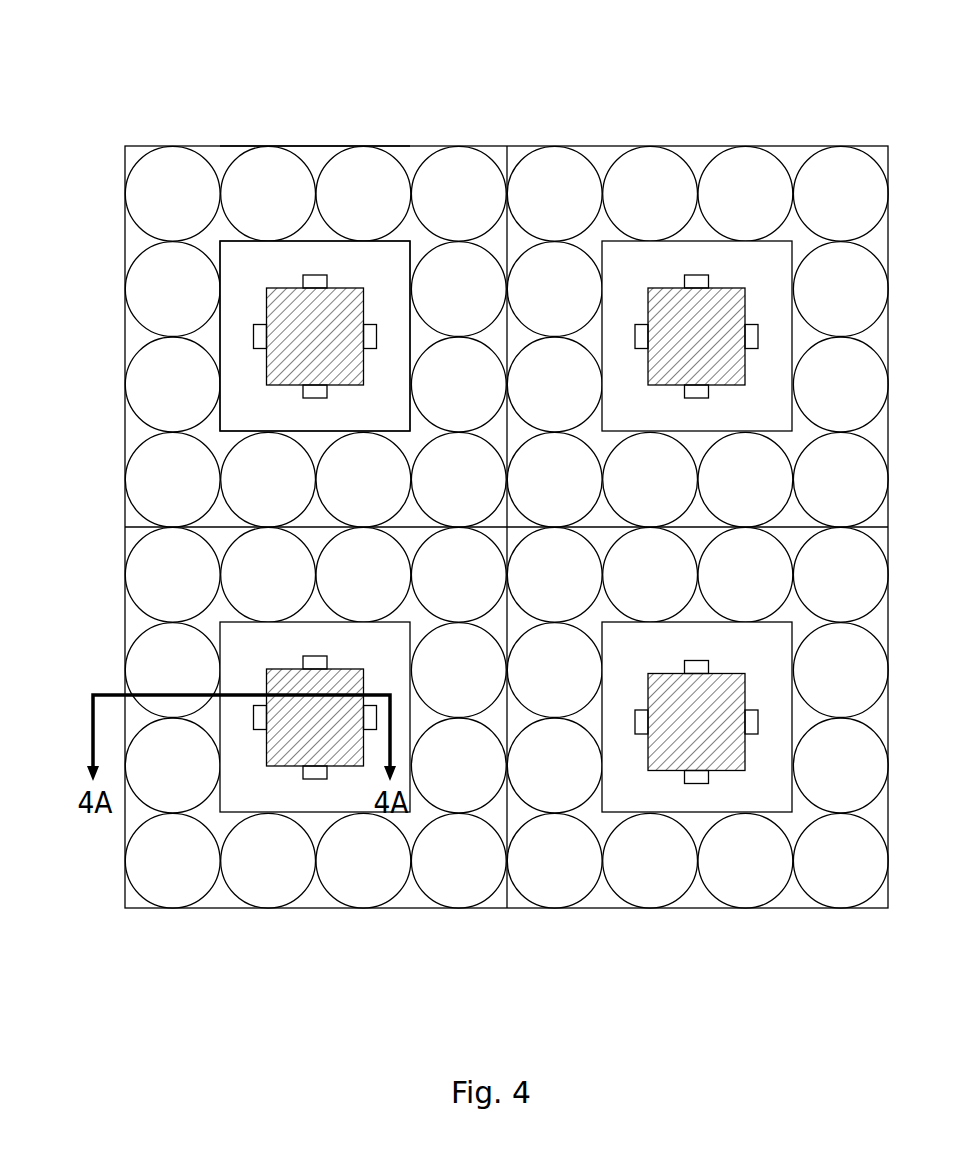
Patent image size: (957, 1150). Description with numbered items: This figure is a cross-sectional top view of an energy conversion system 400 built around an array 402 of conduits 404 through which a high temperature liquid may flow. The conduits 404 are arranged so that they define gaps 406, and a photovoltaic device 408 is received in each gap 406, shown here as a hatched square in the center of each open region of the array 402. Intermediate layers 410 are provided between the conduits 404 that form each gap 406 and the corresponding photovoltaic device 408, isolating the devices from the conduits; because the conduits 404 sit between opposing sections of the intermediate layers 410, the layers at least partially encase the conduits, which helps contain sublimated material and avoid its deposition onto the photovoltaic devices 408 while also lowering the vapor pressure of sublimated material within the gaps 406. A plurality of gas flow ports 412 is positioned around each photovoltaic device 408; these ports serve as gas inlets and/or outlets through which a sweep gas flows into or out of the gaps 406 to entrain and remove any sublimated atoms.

The energy conversion system 400 is at (199, 87).
The array 402 is at (506, 127).
The conduits 404 is at (743, 193).
The gaps 406 is at (241, 282).
The photovoltaic devices 408 is at (293, 363).
The intermediate layers 410 is at (317, 240).
The gas flow ports 412 is at (260, 730).